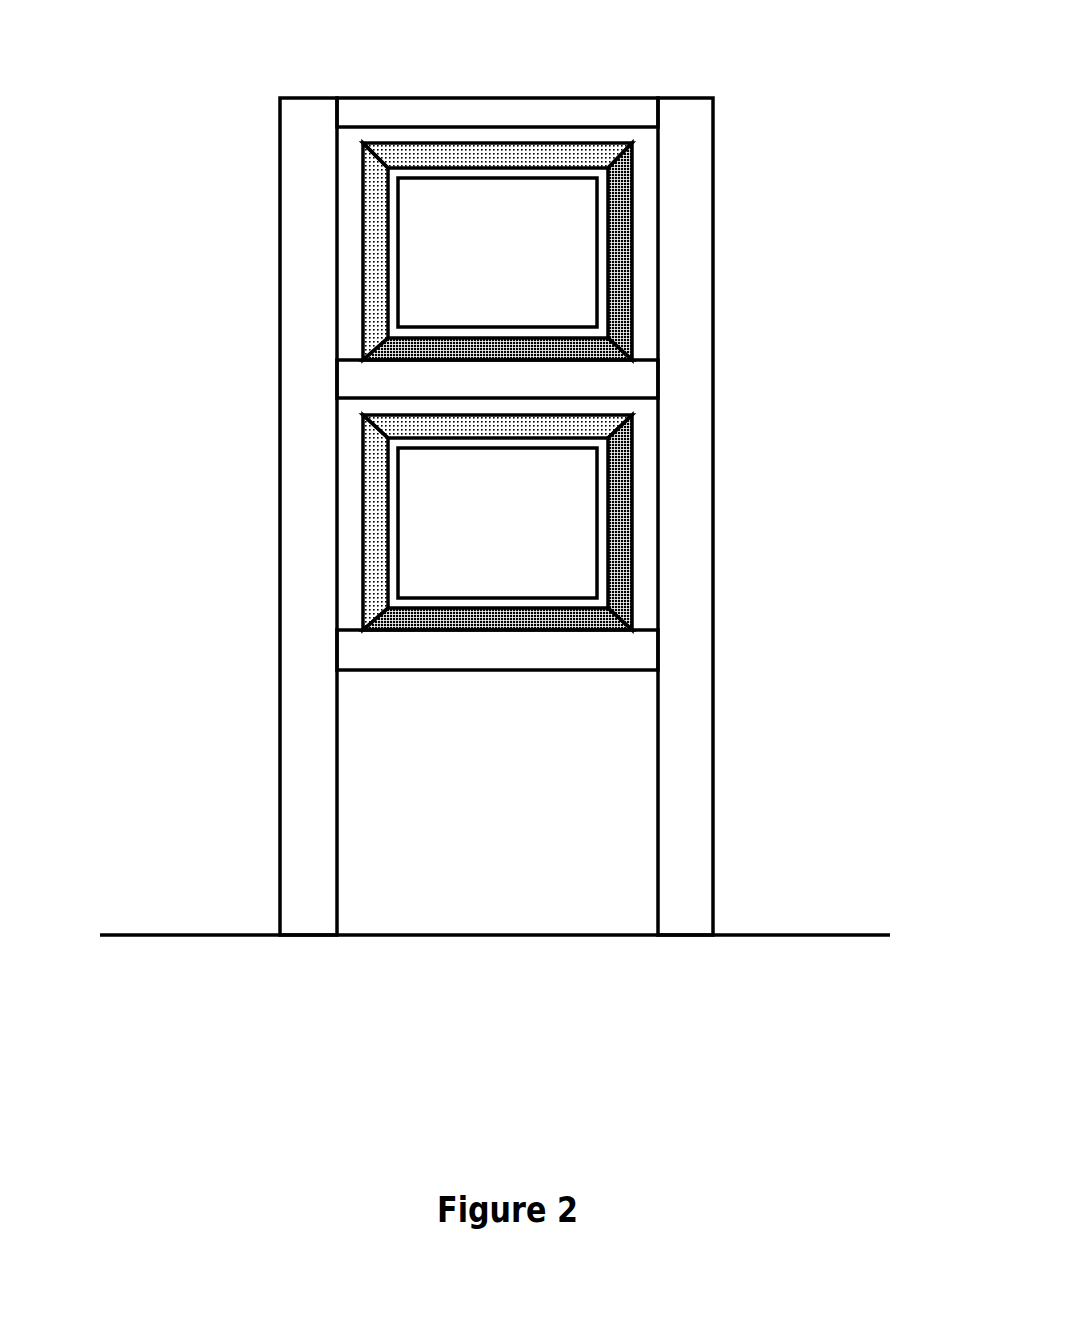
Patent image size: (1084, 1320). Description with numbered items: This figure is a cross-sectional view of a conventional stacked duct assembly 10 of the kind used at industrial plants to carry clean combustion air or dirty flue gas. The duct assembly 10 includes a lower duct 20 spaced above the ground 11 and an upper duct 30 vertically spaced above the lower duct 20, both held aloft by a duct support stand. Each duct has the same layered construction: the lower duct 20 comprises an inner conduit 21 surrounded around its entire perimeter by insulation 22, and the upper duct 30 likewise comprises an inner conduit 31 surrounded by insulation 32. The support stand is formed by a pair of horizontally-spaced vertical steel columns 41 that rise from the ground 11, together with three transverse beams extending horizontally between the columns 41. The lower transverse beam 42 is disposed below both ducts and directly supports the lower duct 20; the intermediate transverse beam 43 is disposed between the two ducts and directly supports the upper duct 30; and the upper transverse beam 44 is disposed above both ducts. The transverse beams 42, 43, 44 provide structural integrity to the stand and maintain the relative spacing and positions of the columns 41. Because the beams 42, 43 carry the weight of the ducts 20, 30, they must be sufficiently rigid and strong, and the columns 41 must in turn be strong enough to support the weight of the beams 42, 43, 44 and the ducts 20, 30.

The duct assembly 10 is at (495, 471).
The ground 11 is at (193, 928).
The lower duct 20 is at (502, 533).
The inner conduit 21 is at (612, 481).
The insulation 22 is at (375, 552).
The upper duct 30 is at (500, 229).
The inner conduit 31 is at (393, 255).
The insulation 32 is at (630, 187).
The vertical steel columns 41 is at (277, 430).
The lower transverse beam 42 is at (417, 671).
The intermediate transverse beam 43 is at (640, 378).
The upper transverse beam 44 is at (472, 100).